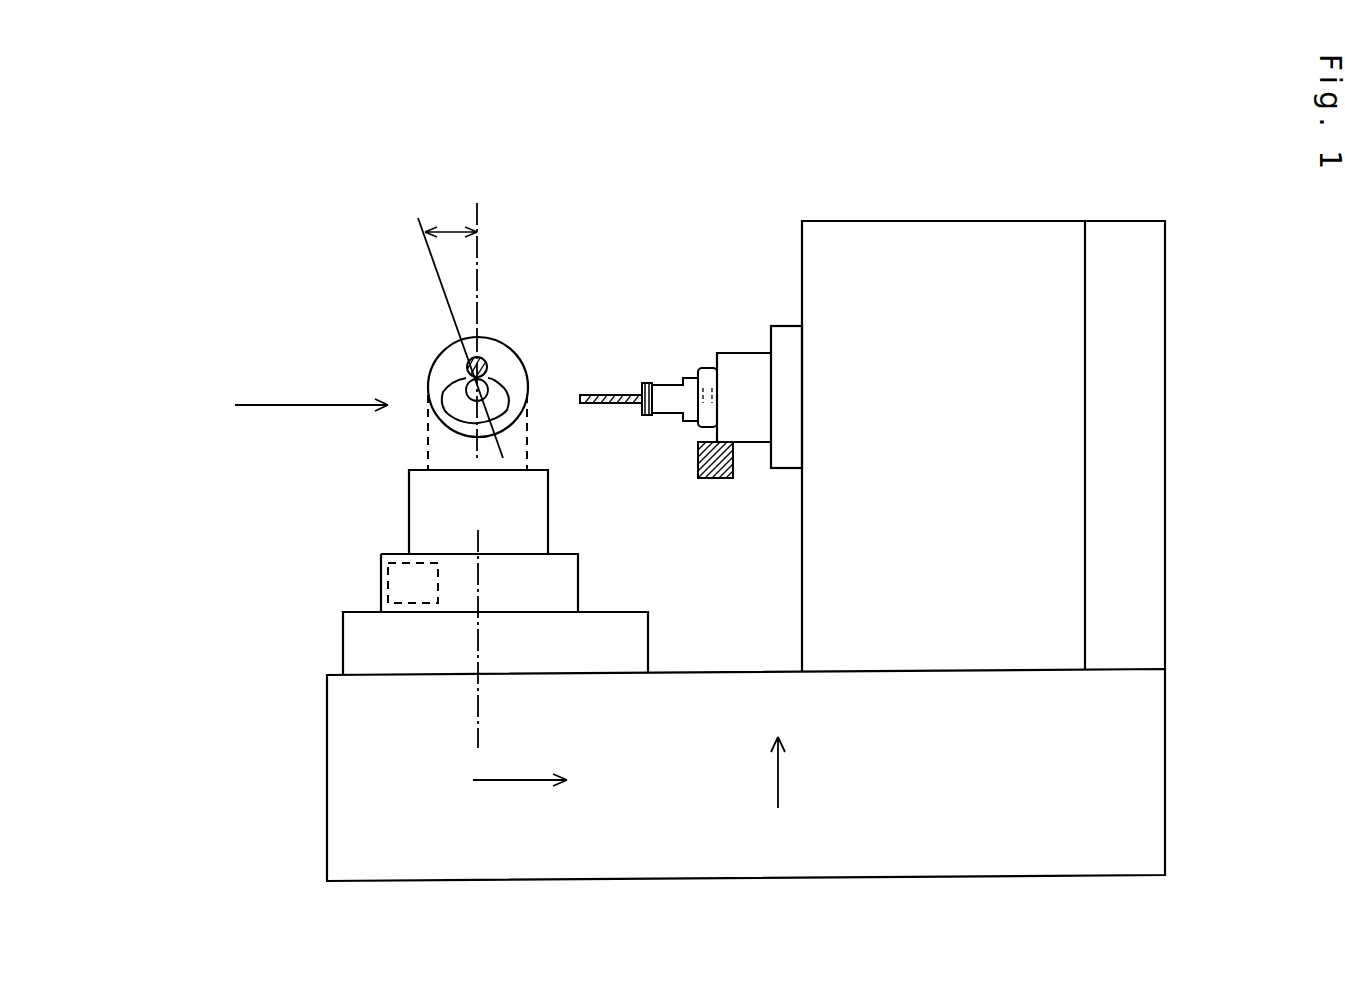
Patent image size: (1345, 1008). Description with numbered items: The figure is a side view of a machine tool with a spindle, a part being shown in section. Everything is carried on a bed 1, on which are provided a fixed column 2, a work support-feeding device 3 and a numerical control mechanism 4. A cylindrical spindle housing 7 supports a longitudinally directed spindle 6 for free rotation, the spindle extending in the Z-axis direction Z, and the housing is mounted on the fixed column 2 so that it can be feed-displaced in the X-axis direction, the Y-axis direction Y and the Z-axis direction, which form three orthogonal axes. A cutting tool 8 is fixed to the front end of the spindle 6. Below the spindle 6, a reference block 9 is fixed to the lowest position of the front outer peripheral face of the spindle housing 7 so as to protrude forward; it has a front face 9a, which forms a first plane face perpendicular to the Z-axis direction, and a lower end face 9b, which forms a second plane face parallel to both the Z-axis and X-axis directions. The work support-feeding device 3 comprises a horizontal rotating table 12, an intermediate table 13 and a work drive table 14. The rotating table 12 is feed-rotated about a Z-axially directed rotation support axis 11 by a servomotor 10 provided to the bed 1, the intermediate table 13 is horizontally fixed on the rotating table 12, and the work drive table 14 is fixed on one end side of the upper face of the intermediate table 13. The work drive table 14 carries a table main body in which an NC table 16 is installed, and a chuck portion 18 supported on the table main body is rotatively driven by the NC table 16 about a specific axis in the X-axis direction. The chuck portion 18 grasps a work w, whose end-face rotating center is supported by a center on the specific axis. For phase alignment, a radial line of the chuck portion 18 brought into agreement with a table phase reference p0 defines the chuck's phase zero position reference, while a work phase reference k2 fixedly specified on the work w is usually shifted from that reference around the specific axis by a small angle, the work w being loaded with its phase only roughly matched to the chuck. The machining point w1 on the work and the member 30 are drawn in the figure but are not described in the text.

The bed 1 is at (1137, 822).
The fixed column 2 is at (936, 475).
The work support-feeding device 3 is at (418, 461).
The numerical control mechanism 4 is at (1128, 638).
The spindle 6 is at (708, 373).
The spindle housing 7 is at (740, 357).
The cutting tool 8 is at (615, 393).
The reference block 9 is at (700, 509).
The front face 9a is at (698, 460).
The lower end face 9b is at (713, 482).
The servomotor 10 is at (410, 583).
The rotation support axis 11 is at (480, 723).
The horizontal rotating table 12 is at (563, 588).
The intermediate table 13 is at (537, 518).
The work drive table 14 is at (291, 410).
The NC table 16 is at (522, 457).
The chuck portion 18 is at (502, 370).
The saddle 30 is at (350, 648).
The work w is at (460, 410).
The machining point w1 is at (491, 353).
The work phase reference k2 is at (430, 268).
The table phase reference p0 is at (477, 257).
The Y-axis direction Y is at (777, 752).
The Z-axis direction Z is at (534, 780).